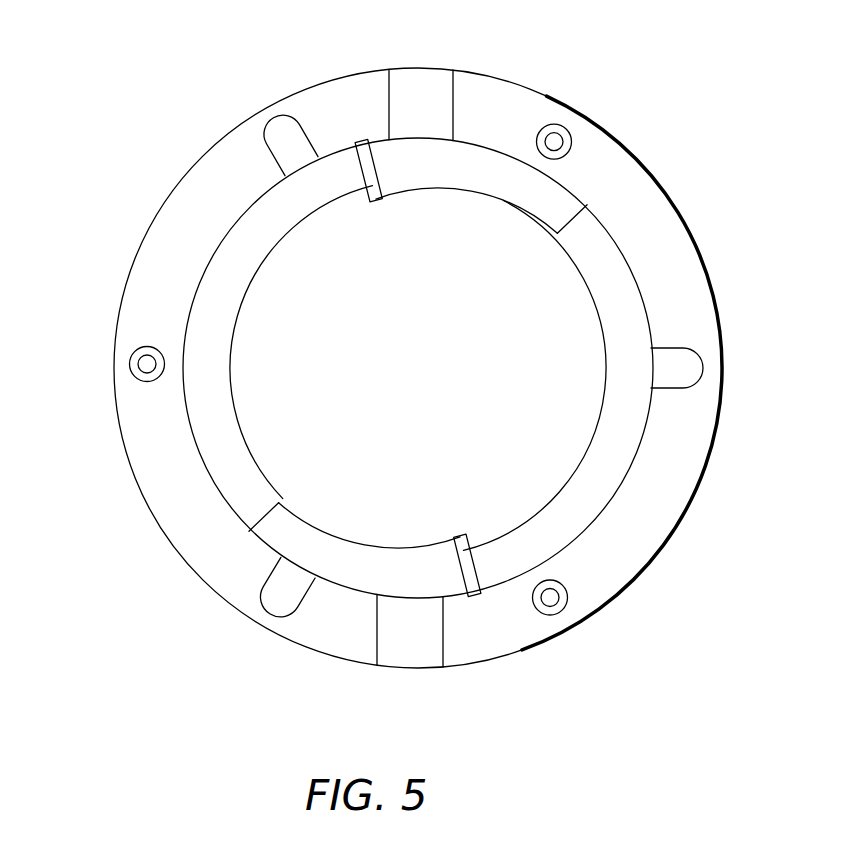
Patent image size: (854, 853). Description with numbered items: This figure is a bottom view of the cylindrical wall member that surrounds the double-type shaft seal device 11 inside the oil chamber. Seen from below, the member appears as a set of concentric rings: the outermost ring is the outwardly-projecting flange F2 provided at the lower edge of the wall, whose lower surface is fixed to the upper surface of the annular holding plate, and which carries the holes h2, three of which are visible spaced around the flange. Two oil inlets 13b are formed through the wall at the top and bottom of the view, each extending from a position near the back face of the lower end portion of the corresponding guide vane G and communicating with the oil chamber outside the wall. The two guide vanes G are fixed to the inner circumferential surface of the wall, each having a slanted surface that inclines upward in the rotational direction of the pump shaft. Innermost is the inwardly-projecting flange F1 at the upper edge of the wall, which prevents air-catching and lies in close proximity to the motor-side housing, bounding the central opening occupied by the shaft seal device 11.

The double-type shaft seal device 11 is at (346, 363).
The oil inlet 13b is at (430, 80).
The inwardly-projecting flange F1 is at (610, 383).
The outwardly-projecting flange F2 is at (696, 461).
The guide vane G is at (450, 177).
The hole h2 is at (560, 138).